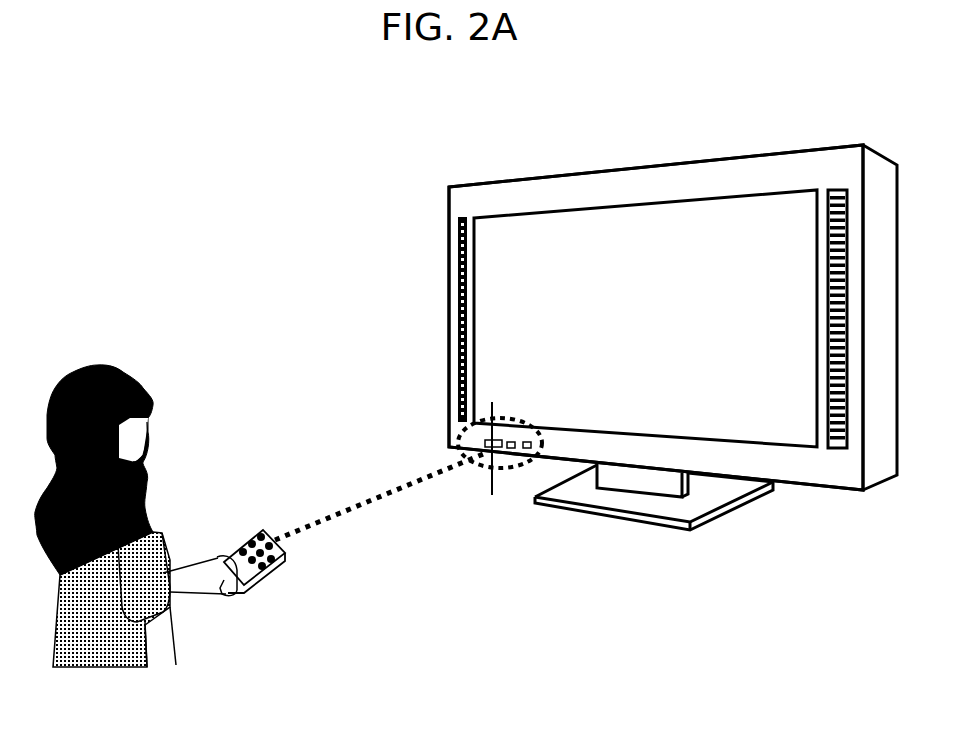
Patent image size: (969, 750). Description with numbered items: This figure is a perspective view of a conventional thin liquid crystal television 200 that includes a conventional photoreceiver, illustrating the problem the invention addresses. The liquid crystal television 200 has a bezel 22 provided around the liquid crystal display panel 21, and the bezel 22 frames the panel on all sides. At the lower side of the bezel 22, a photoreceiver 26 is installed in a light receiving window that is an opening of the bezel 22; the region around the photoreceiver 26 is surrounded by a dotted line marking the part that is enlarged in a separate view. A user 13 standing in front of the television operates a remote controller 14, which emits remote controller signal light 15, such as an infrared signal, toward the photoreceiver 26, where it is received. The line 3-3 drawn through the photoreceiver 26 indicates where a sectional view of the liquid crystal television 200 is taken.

The liquid crystal television 200 is at (825, 147).
The bezel 22 is at (568, 192).
The liquid crystal display panel 21 is at (748, 217).
The photoreceiver 26 is at (497, 440).
The line 3- 3 is at (494, 452).
The remote controller signal light 15 is at (330, 517).
The user 13 is at (98, 362).
The remote controller 14 is at (270, 567).